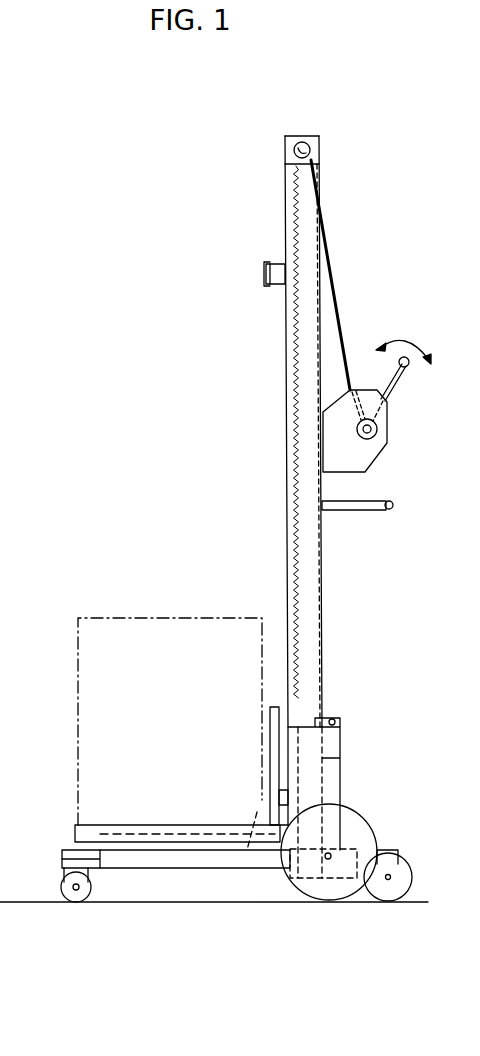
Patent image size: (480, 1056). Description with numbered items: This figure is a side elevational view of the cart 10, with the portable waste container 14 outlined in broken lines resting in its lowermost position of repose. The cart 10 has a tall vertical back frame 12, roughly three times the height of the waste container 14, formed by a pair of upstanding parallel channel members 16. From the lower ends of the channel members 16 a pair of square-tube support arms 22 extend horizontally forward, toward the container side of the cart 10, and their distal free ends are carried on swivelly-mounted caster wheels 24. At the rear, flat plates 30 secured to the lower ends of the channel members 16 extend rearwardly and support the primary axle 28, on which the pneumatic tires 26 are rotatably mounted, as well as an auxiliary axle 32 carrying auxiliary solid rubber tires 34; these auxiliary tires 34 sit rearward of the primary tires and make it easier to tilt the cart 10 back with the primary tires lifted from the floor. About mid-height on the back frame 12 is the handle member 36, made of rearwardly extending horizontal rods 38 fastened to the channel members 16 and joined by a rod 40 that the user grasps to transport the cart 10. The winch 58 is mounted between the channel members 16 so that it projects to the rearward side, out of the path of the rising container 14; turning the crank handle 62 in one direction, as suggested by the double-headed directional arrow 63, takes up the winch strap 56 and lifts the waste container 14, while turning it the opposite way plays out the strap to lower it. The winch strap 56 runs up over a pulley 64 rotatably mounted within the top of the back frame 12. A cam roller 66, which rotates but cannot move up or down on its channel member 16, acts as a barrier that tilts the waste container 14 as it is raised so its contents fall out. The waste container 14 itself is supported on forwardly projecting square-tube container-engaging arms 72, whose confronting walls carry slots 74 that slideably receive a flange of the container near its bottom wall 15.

The cart 10 is at (188, 285).
The back frame 12 is at (284, 412).
The portable waste container 14 is at (188, 640).
The bottom wall 15 is at (170, 866).
The upstanding channel member 16 is at (300, 594).
The support arm 22 is at (150, 856).
The caster wheel 24 is at (89, 895).
The pneumatic tire 26 is at (348, 822).
The primary axle 28 is at (327, 860).
The flat plate 30 is at (364, 868).
The auxiliary axle 32 is at (386, 880).
The auxiliary solid rubber tire 34 is at (402, 886).
The handle member 36 is at (363, 492).
The parallel rod 38 is at (352, 510).
The rod 40 is at (394, 505).
The winch strap 56 is at (341, 287).
The winch 58 is at (380, 440).
The crank handle 62 is at (407, 368).
The double-headed directional arrow 63 is at (413, 338).
The pulley 64 is at (291, 149).
The cam roller 66 is at (272, 286).
The container-engaging arm 72 is at (97, 830).
The slot 74 is at (160, 830).